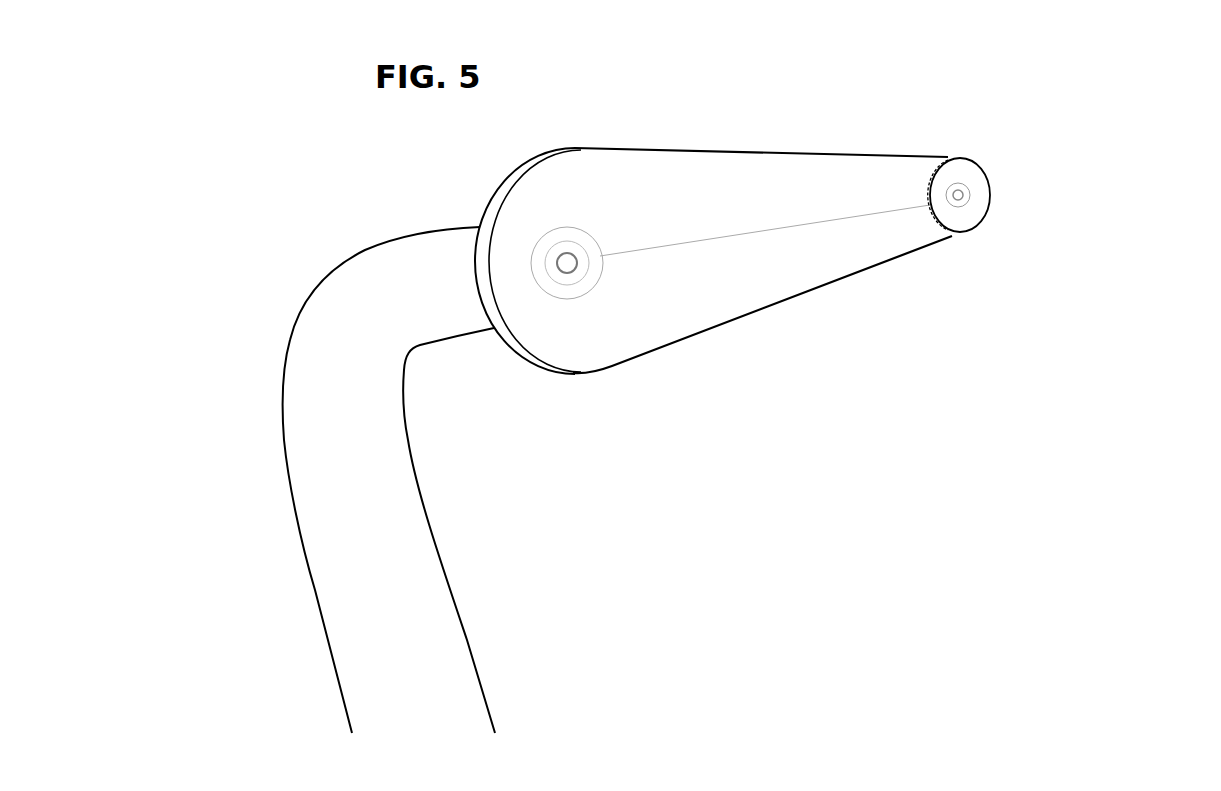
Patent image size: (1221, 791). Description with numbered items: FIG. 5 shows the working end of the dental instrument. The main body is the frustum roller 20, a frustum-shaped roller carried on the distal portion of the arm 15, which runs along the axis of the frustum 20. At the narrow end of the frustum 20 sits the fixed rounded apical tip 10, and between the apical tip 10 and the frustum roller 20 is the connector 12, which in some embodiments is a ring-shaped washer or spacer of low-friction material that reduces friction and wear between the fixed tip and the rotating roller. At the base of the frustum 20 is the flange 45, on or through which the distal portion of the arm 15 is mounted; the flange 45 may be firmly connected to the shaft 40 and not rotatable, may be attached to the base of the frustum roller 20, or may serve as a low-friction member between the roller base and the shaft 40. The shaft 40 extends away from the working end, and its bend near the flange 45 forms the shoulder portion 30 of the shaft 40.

The rounded apical tip 10 is at (983, 196).
The connector 12 is at (958, 231).
The distal portion of the arm 15 is at (738, 233).
The frustum roller 20 is at (642, 318).
The shoulder portion of the shaft 30 is at (312, 346).
The shaft 40 is at (437, 698).
The flange 45 is at (495, 182).